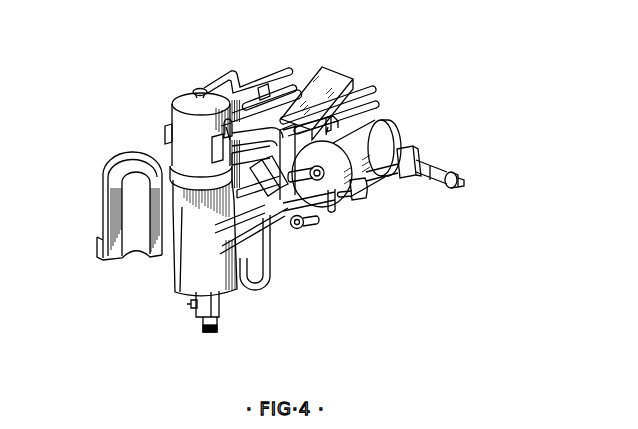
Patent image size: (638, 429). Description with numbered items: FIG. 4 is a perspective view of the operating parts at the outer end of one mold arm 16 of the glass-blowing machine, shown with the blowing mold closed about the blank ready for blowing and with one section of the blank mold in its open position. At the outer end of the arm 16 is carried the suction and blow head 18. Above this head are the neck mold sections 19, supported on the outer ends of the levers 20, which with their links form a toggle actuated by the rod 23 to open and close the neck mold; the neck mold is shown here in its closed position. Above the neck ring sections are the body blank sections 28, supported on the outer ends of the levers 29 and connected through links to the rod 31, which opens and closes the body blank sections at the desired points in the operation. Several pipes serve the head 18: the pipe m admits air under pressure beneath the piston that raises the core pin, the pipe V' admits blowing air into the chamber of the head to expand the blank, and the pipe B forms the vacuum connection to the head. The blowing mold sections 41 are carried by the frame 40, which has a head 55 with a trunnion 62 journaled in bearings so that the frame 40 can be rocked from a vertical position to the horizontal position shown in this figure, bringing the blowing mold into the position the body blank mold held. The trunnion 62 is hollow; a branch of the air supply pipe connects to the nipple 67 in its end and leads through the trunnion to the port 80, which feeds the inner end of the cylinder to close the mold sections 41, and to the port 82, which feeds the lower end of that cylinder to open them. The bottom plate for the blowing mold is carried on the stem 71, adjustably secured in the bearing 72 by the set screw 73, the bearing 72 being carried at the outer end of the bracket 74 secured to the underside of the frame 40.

The pipe m is at (251, 87).
The pipe V' is at (269, 62).
The pipe B is at (274, 92).
The arm 16 is at (325, 80).
The suction and blow head 18 is at (180, 128).
The neck mold sections 19 is at (192, 178).
The levers 20 is at (328, 195).
The actuating rod 23 is at (359, 89).
The body blank sections 28 is at (107, 192).
The levers 29 is at (321, 196).
The rod 31 is at (373, 101).
The frame 40 is at (347, 199).
The blowing mold sections 41 is at (197, 275).
The head 55 is at (387, 128).
The trunnion 62 is at (438, 172).
The nipple 67 is at (459, 176).
The stem 71 is at (209, 331).
The bearing 72 is at (205, 312).
The set screw 73 is at (193, 303).
The bracket 74 is at (239, 290).
The port 80 is at (428, 163).
The port 82 is at (420, 178).